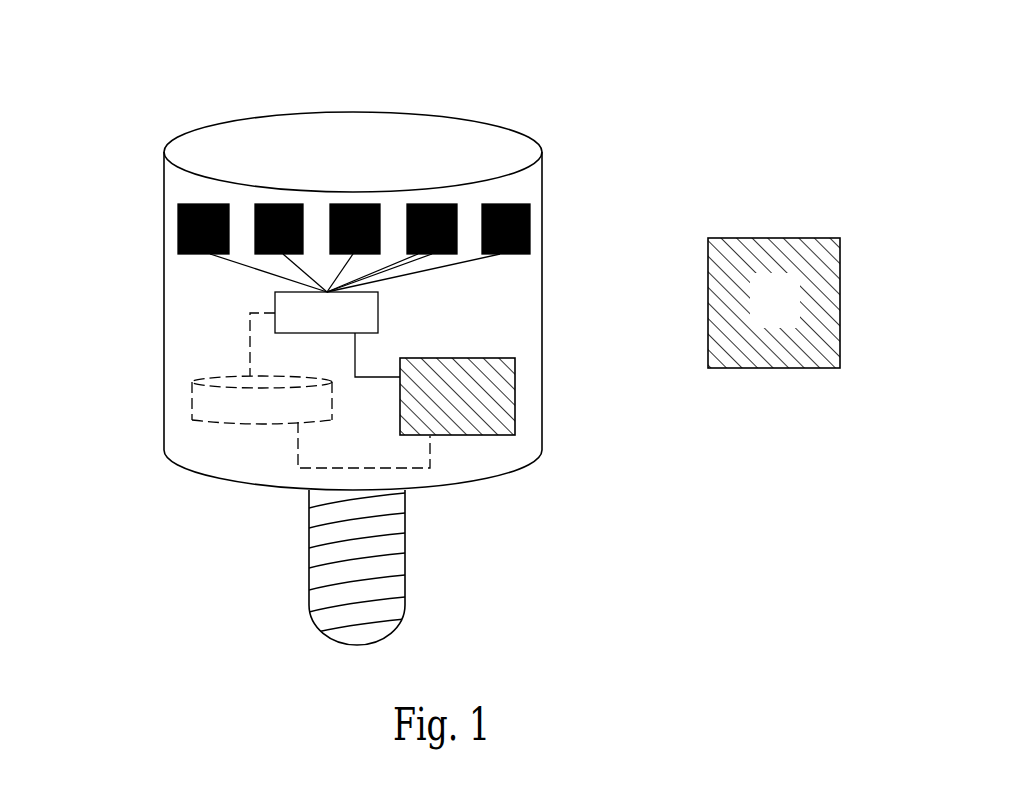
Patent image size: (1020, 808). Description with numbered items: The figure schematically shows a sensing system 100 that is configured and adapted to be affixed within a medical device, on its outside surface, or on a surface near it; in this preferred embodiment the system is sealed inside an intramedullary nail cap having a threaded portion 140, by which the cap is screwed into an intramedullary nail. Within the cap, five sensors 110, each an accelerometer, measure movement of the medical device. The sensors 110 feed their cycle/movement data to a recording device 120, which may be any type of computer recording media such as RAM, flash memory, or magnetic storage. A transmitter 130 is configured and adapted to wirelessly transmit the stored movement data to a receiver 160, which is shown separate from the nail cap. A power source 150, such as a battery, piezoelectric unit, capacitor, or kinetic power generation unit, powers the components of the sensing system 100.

The sensing system 100 is at (533, 80).
The sensor 110 is at (530, 216).
The recording device 120 is at (290, 307).
The transmitter 130 is at (487, 437).
The threaded portion 140 is at (309, 606).
The power source 150 is at (232, 413).
The receiver 160 is at (807, 370).